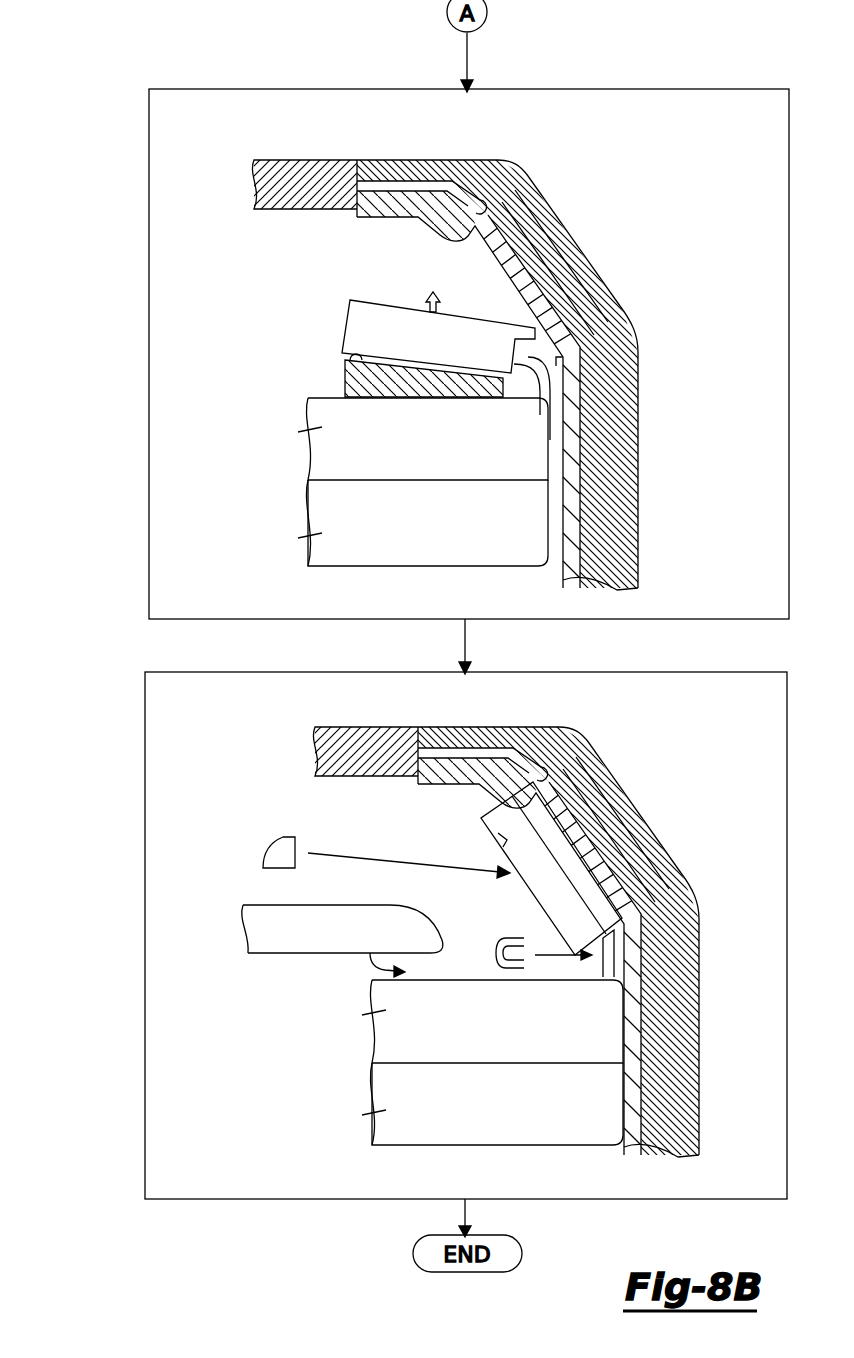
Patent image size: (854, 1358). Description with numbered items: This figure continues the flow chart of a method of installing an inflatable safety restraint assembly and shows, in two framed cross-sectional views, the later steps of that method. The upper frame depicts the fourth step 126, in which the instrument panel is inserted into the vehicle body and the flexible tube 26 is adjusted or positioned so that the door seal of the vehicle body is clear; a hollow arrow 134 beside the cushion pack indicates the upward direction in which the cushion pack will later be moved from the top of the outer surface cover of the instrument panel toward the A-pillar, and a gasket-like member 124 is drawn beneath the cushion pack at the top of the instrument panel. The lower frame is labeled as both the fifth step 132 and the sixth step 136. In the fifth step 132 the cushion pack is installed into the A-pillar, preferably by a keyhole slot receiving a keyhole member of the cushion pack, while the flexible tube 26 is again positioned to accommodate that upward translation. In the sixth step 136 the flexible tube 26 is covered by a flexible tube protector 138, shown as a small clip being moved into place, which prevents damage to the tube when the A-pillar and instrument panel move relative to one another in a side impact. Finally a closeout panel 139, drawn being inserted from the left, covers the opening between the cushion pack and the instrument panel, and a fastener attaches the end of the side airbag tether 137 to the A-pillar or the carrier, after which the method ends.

The flexible tube 26 is at (540, 392).
The gasket 124 is at (347, 378).
The fourth step 126 is at (148, 396).
The fifth step 132 is at (404, 935).
The removal direction 134 is at (427, 297).
The sixth step 136 is at (147, 994).
The side airbag tether 137 is at (565, 866).
The flexible tube protector 138 is at (513, 970).
The closeout panel 139 is at (282, 850).